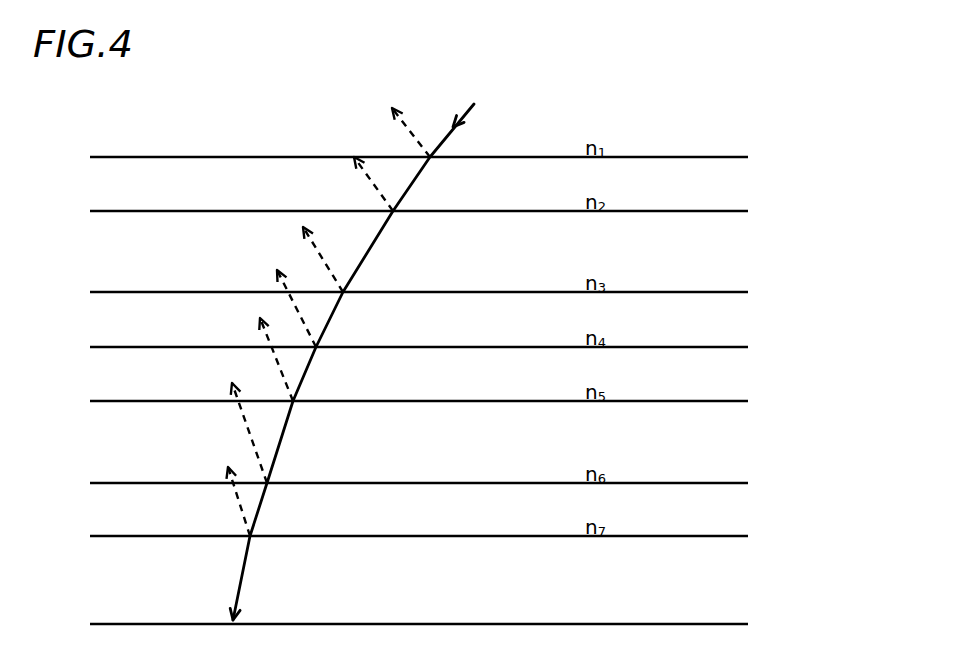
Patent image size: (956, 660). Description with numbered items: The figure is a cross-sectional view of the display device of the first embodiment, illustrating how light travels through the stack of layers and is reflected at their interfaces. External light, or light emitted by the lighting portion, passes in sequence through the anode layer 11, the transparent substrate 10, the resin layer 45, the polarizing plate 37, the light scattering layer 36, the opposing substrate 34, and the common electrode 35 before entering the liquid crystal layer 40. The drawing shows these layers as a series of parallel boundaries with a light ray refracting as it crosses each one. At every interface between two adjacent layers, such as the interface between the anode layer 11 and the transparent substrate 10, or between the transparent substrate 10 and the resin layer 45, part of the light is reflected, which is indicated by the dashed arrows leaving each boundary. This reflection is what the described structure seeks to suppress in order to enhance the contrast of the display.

The anode layer 11 is at (722, 146).
The transparent substrate 10 is at (722, 200).
The resin layer 45 is at (722, 261).
The polarizing plate 37 is at (722, 334).
The light scattering layer 36 is at (722, 389).
The opposing substrate 34 is at (722, 448).
The common electrode 35 is at (722, 523).
The liquid crystal layer 40 is at (722, 609).